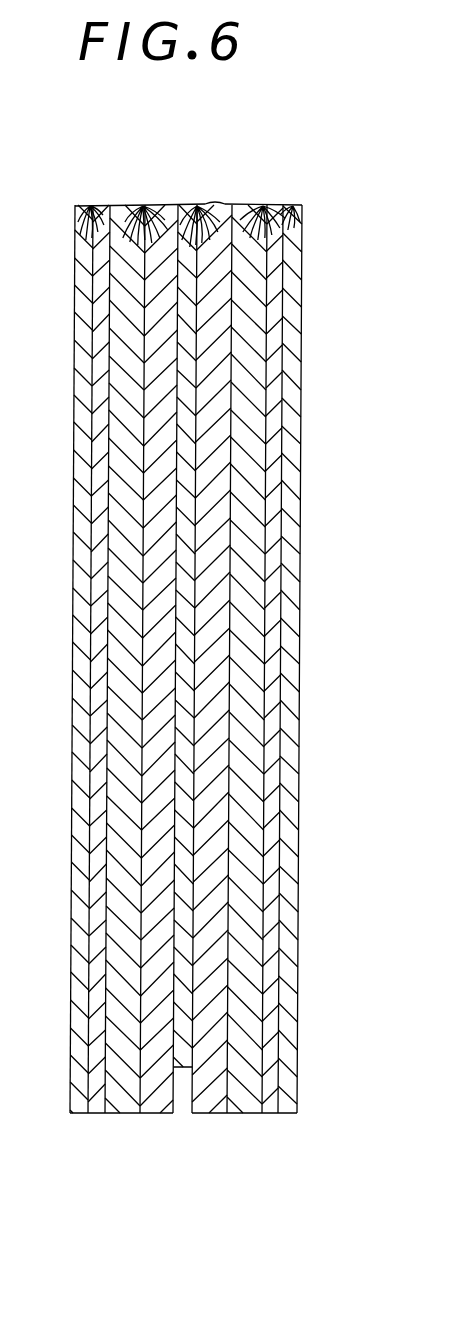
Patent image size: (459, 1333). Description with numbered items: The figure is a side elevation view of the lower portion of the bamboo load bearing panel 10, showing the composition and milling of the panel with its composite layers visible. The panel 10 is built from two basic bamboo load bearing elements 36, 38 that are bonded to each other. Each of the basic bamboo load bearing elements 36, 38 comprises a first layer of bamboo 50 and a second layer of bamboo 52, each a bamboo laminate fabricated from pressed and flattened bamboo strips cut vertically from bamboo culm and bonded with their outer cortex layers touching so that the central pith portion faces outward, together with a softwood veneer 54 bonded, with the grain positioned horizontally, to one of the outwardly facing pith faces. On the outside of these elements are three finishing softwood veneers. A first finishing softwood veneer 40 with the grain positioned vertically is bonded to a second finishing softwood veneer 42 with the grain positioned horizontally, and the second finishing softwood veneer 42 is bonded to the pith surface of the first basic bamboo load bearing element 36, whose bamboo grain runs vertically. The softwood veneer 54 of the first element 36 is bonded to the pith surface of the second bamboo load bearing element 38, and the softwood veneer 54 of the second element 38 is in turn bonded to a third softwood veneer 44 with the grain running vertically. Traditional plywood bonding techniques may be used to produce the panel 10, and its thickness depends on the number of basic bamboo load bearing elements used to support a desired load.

The bamboo load bearing panel 10 is at (320, 598).
The first basic bamboo load bearing element 36 is at (175, 1118).
The second basic bamboo load bearing element 38 is at (278, 1118).
The first finishing softwood veneer 40 is at (72, 1115).
The second finishing softwood veneer 42 is at (92, 1113).
The third finishing softwood veneer 44 is at (289, 1115).
The first layer of bamboo 50 is at (123, 206).
The second layer of bamboo 52 is at (160, 206).
The softwood veneer 54 is at (187, 206).